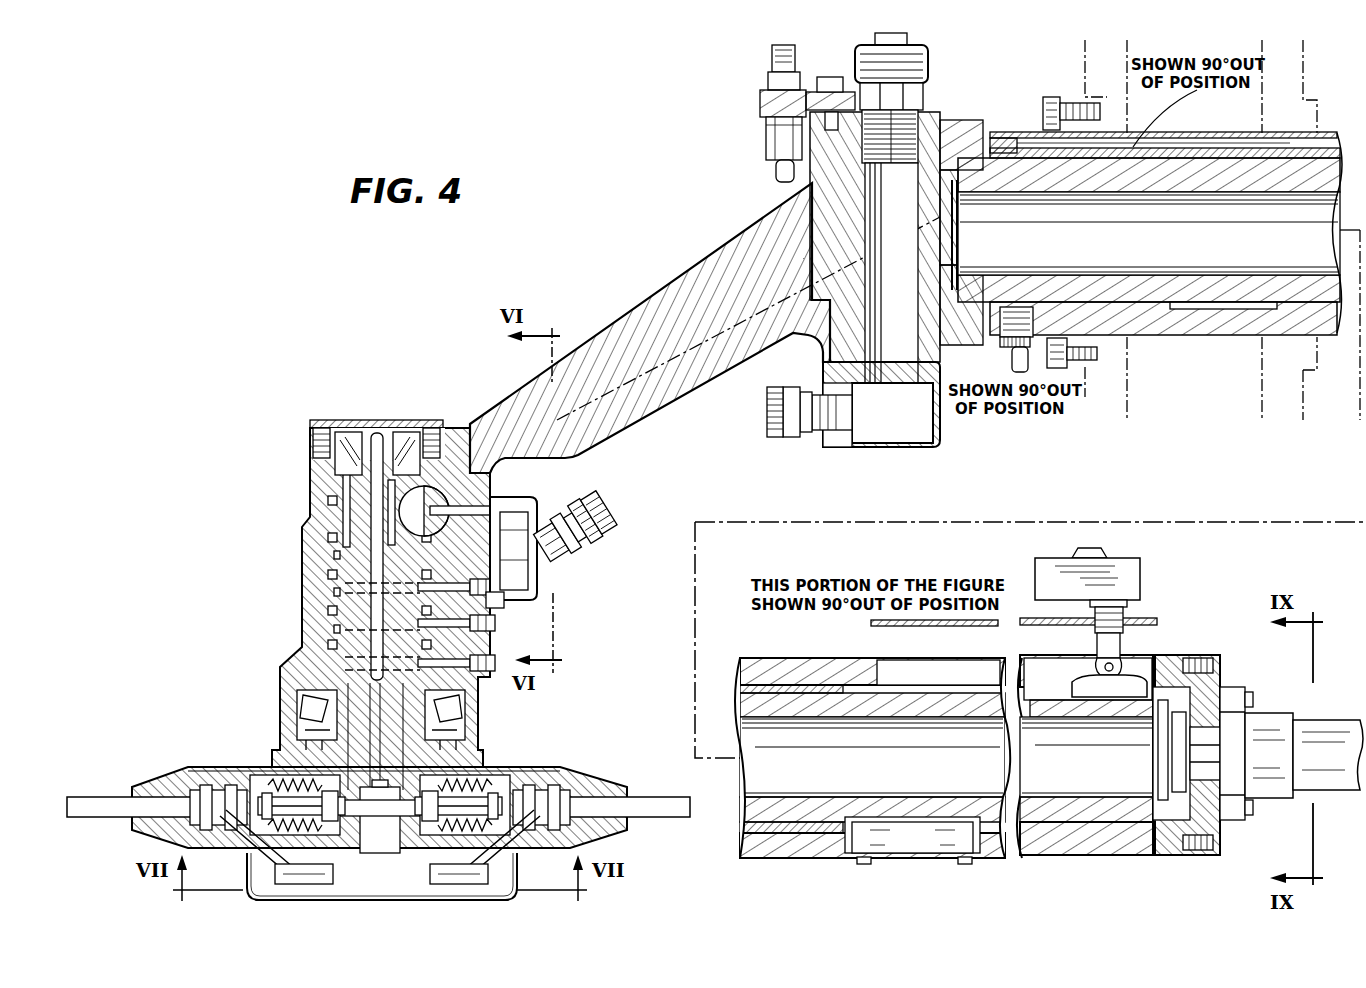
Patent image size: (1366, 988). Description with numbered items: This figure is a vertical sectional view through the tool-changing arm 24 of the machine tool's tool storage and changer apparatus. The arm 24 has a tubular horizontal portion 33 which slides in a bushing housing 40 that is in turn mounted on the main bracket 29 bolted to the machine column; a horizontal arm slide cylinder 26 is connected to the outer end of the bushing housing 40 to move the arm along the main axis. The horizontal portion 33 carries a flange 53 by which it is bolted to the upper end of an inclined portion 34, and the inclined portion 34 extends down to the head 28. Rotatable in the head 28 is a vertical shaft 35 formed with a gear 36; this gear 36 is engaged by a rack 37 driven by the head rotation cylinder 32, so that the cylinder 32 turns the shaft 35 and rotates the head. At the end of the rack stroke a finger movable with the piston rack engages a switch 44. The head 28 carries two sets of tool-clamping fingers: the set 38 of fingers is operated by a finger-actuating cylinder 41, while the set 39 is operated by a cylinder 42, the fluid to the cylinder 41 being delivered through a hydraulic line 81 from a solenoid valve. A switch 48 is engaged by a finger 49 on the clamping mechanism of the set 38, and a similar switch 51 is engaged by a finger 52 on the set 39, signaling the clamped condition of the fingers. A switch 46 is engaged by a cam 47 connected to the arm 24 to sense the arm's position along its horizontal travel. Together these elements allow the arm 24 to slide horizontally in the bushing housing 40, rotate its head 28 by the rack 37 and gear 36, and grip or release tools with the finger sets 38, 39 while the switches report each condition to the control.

The arm 24 is at (967, 130).
The horizontal arm slide cylinder 26 is at (1326, 751).
The head 28 is at (312, 616).
The bracket 29 is at (1297, 88).
The head rotation cylinder 32 is at (432, 528).
The tubular horizontal portion 33 is at (1218, 177).
The inclined portion 34 is at (682, 287).
The vertical shaft 35 is at (347, 562).
The gear 36 is at (352, 500).
The rack 37 is at (433, 497).
The set of fingers 38 is at (110, 800).
The set of fingers 39 is at (642, 800).
The bushing housing 40 is at (1283, 322).
The finger-actuating cylinder 41 is at (270, 775).
The finger-actuating cylinder 42 is at (482, 772).
The switch 44 is at (520, 540).
The switch 46 is at (1132, 571).
The cam 47 is at (1125, 682).
The switch 48 is at (334, 880).
The finger 49 is at (241, 860).
The switch 51 is at (425, 873).
The finger 52 is at (516, 860).
The flange 53 is at (1010, 355).
The line 81 is at (502, 600).